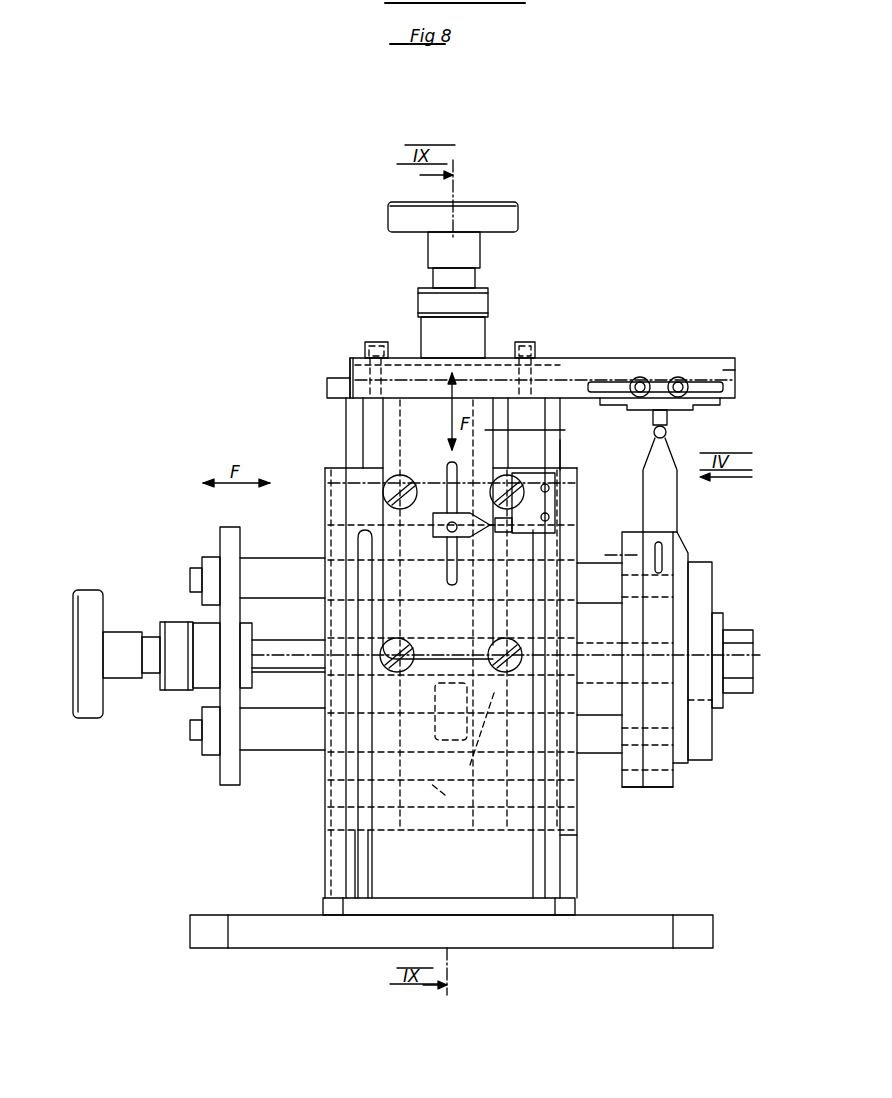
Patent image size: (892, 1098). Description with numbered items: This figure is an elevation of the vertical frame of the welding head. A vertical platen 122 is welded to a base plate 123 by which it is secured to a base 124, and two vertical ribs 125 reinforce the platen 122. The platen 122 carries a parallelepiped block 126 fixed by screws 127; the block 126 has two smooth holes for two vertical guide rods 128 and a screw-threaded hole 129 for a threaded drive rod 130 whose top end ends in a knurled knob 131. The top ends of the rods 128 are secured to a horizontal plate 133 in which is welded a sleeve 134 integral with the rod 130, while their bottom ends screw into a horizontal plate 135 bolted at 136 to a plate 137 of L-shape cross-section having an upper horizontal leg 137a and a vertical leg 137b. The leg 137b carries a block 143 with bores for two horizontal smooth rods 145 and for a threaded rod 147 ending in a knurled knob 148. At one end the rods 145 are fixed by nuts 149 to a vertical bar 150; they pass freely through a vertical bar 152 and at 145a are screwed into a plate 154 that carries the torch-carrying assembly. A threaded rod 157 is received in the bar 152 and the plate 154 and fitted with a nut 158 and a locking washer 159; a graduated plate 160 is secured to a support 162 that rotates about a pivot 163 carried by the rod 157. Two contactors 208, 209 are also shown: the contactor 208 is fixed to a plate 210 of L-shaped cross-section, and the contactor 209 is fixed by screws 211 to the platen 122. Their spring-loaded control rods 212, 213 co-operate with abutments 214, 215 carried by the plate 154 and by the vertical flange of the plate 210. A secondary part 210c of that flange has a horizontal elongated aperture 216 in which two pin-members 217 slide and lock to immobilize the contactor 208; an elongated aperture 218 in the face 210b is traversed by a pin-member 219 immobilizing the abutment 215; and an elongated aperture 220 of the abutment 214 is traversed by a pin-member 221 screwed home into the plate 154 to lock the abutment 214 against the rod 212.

The vertical platen 122 is at (563, 843).
The base plate 123 is at (563, 908).
The base 124 is at (685, 932).
The vertical ribs 125 is at (357, 857).
The parallelepiped block 126 is at (468, 737).
The screws 127 is at (330, 483).
The vertical guide rods 128 is at (360, 415).
The screw-threaded hole 129 is at (440, 618).
The threaded drive rod 130 is at (437, 570).
The knurled knob 131 is at (497, 213).
The horizontal plate 133 is at (325, 382).
The sleeve 134 is at (470, 337).
The horizontal plate 135 is at (412, 838).
The bolts 136 is at (376, 345).
The plate of L-shape cross-section 137 is at (558, 456).
The upper horizontal leg 137a is at (350, 362).
The vertical leg 137b is at (357, 445).
The block 143 is at (454, 795).
The horizontal smooth rods 145 is at (307, 577).
The threaded ends of the rods 145a is at (640, 597).
The threaded rod 147 is at (265, 652).
The knurled knob 148 is at (85, 608).
The nuts 149 is at (215, 562).
The vertical bar 150 is at (242, 537).
The vertical bar 152 is at (633, 768).
The plate 154 is at (650, 777).
The threaded rod 157 is at (640, 680).
The nut 158 is at (743, 637).
The locking washer 159 is at (718, 620).
The graduated plate 160 is at (690, 556).
The support 162 is at (700, 580).
The pivot 163 is at (695, 699).
The contactor 208 is at (655, 430).
The contactor 209 is at (548, 523).
The plate of L-shaped cross-section 210 is at (592, 352).
The face of the plate 210b is at (549, 426).
The secondary part of the vertical flange 210c is at (728, 372).
The screws 211 is at (550, 489).
The spring-loaded control rod 212 is at (668, 430).
The spring-loaded control rod 213 is at (505, 535).
The abutment 214 is at (663, 500).
The abutment 215 is at (440, 528).
The horizontal elongated aperture 216 is at (700, 386).
The pin-members 217 is at (677, 378).
The elongated aperture 218 is at (448, 478).
The pin-member 219 is at (447, 545).
The elongated aperture 220 is at (613, 546).
The pin-member 221 is at (662, 545).